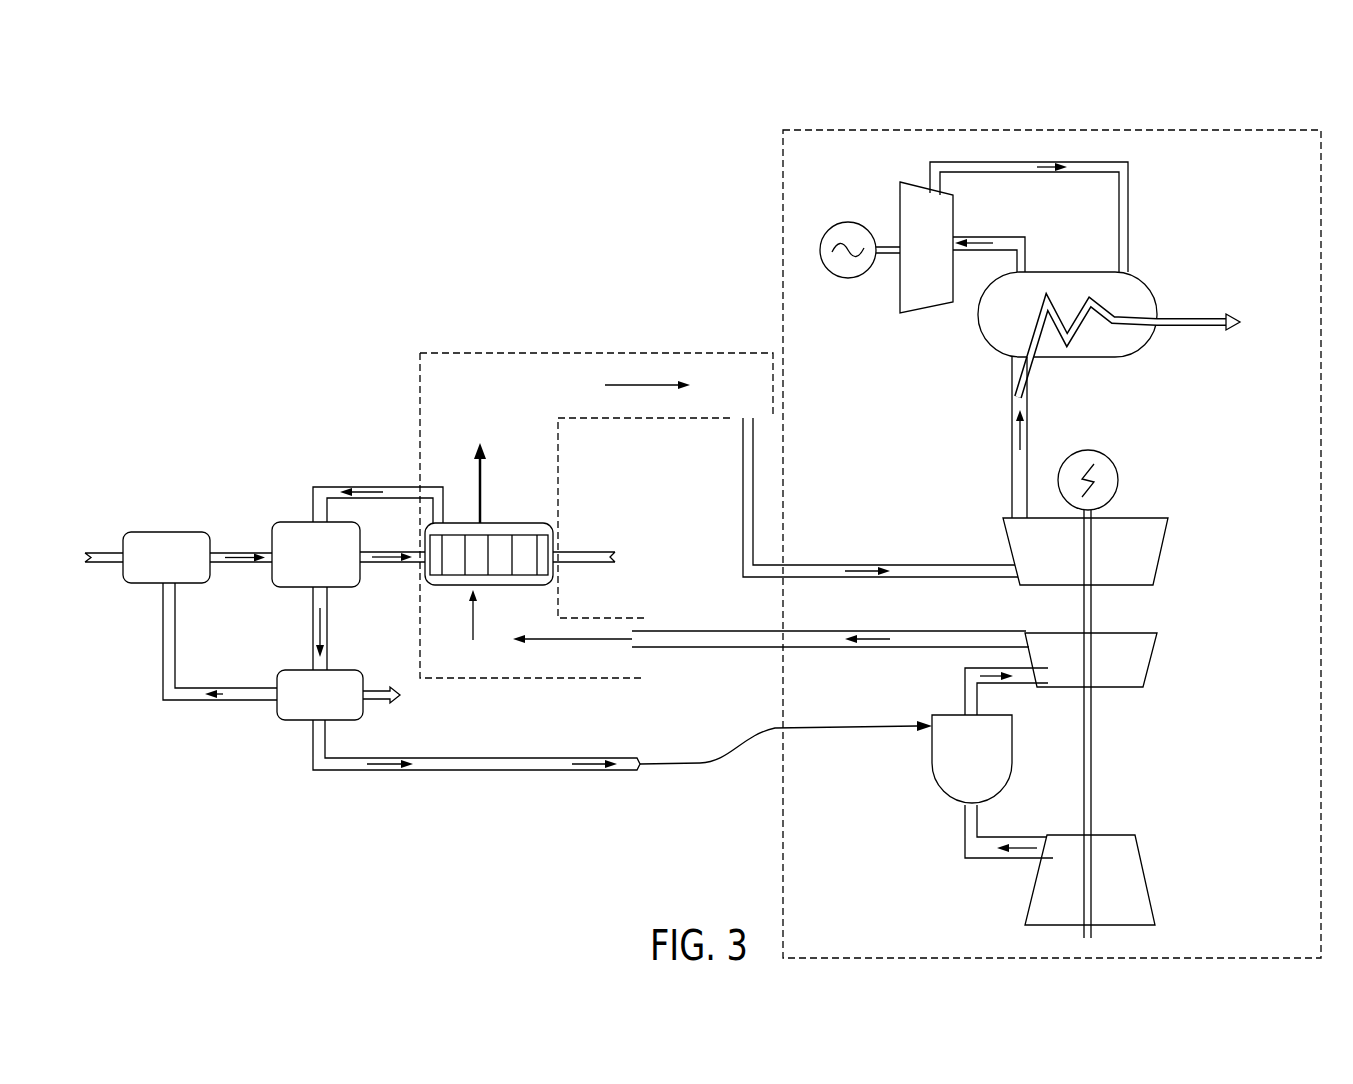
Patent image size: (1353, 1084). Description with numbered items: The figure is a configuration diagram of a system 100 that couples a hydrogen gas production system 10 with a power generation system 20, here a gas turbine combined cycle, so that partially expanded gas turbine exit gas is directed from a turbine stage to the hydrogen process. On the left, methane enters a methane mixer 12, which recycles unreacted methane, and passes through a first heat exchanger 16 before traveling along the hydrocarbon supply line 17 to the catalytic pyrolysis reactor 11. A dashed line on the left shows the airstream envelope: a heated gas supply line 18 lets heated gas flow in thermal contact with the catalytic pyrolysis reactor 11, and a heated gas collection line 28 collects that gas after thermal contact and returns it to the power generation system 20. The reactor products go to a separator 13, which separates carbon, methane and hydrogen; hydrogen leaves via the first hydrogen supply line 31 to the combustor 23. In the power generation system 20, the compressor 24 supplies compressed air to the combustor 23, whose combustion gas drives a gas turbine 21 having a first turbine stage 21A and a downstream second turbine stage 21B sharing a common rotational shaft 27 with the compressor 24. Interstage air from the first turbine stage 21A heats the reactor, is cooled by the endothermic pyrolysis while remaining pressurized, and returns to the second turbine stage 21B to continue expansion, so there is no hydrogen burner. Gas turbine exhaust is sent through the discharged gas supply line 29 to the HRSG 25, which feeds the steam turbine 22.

The system 100 is at (758, 114).
The hydrogen gas production system 10 is at (405, 336).
The catalytic pyrolysis reactor 11 is at (530, 526).
The methane mixer 12 is at (163, 532).
The separator 13 is at (292, 720).
The first heat exchanger 16 is at (330, 587).
The hydrocarbon supply line 17 is at (370, 565).
The heated gas supply line 18 is at (448, 669).
The heated gas collection line 28 is at (500, 398).
The first hydrogen supply line 31 is at (633, 770).
The power generation system 20 is at (1125, 118).
The gas turbine 21 is at (1159, 694).
The first turbine stage 21A is at (1147, 663).
The second turbine stage 21B is at (1160, 558).
The steam turbine 22 is at (930, 313).
The combustor 23 is at (933, 783).
The compressor 24 is at (1142, 865).
The HRSG 25 is at (1142, 283).
The common rotational shaft 27 is at (1083, 755).
The discharged gas supply line 29 is at (1010, 445).